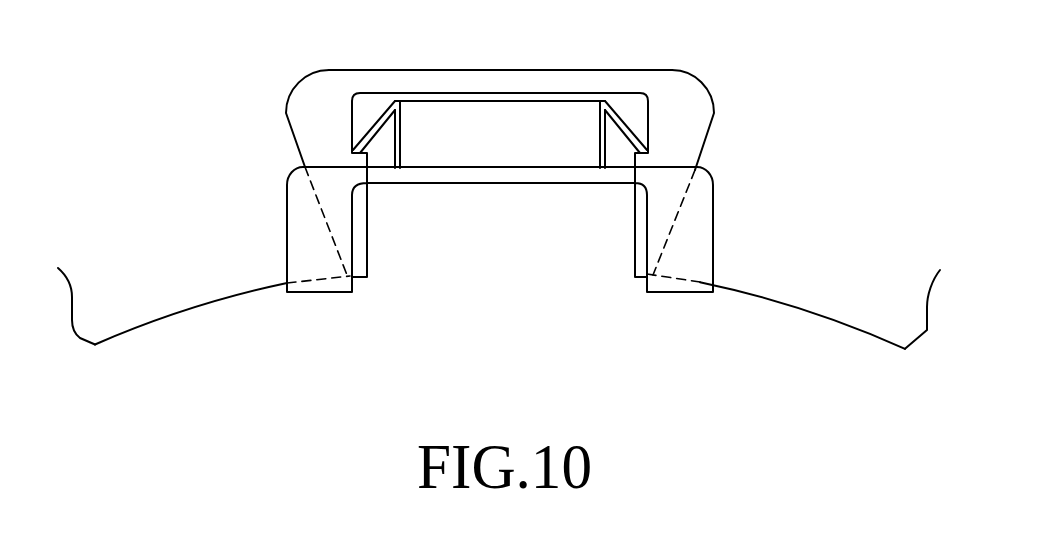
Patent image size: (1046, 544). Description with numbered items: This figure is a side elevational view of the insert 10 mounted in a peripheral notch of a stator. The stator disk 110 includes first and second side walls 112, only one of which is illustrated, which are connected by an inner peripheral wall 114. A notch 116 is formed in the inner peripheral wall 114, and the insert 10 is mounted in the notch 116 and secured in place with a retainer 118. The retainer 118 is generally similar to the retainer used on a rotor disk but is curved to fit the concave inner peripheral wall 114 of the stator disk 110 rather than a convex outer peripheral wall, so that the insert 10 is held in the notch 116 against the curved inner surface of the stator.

The insert 10 is at (690, 136).
The stator disk 110 is at (885, 308).
The side walls 112 is at (857, 258).
The inner peripheral wall 114 is at (800, 307).
The notch 116 is at (566, 69).
The retainer 118 is at (668, 292).